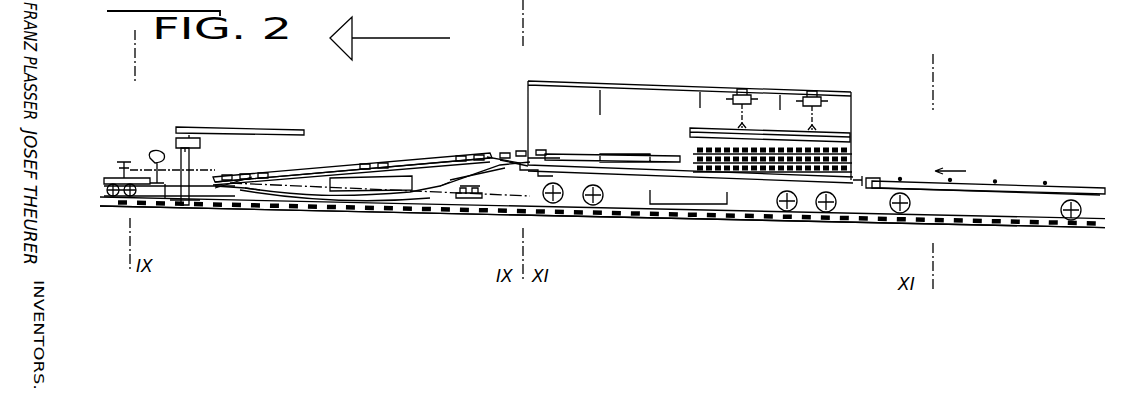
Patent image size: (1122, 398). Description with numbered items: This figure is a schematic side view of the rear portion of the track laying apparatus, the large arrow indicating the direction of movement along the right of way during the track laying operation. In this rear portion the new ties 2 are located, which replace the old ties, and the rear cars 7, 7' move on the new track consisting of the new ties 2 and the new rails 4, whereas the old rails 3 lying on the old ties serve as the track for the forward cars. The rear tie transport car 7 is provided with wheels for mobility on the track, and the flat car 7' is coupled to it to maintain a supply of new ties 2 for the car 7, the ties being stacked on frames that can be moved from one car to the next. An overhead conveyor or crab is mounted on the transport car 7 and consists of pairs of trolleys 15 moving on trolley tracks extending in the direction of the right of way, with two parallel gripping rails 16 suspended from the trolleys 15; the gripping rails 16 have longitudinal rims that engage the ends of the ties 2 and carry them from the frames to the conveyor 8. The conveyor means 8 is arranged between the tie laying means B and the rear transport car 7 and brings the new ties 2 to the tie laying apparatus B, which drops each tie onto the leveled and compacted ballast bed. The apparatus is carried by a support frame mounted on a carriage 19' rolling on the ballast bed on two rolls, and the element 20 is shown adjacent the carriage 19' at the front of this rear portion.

The new ties 2 is at (291, 207).
The old rails 3 is at (458, 193).
The new rails 4 is at (400, 202).
The rear tie transport car 7 is at (704, 171).
The flat car 7' is at (988, 179).
The conveyor means 8 is at (383, 160).
The trolleys 15 is at (806, 96).
The gripping rails 16 is at (726, 130).
The carriage 19' is at (122, 201).
The front frame 20 is at (152, 199).
The tie laying means B is at (198, 124).